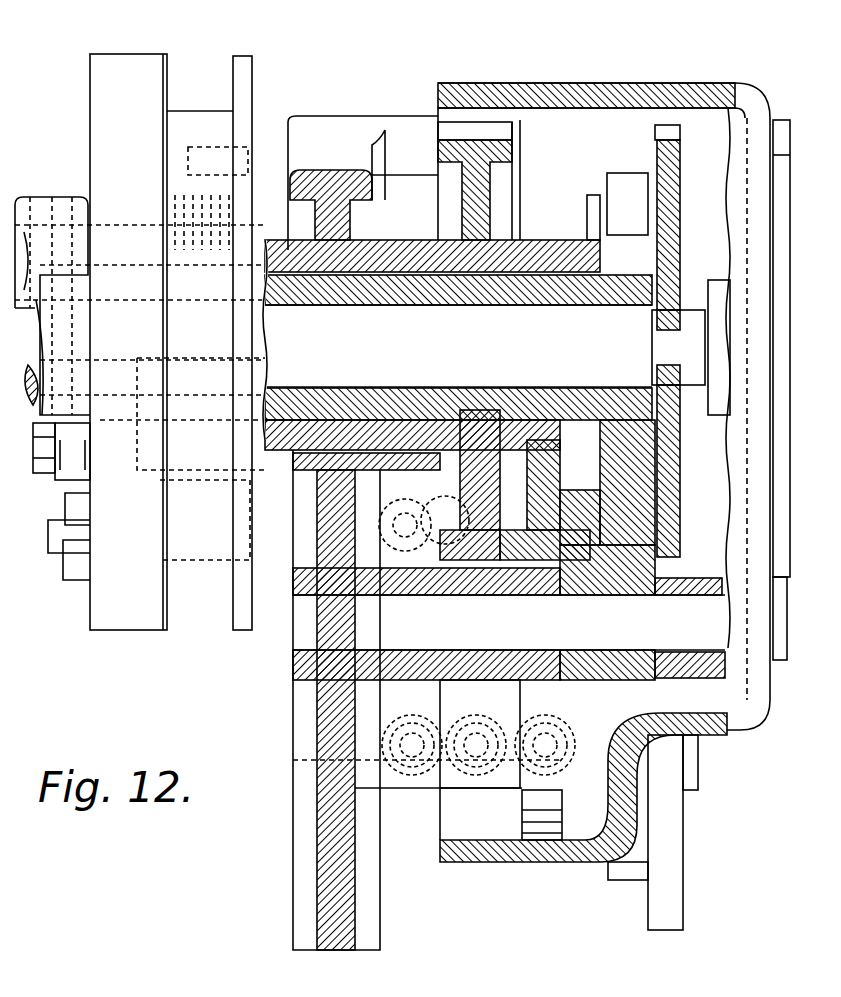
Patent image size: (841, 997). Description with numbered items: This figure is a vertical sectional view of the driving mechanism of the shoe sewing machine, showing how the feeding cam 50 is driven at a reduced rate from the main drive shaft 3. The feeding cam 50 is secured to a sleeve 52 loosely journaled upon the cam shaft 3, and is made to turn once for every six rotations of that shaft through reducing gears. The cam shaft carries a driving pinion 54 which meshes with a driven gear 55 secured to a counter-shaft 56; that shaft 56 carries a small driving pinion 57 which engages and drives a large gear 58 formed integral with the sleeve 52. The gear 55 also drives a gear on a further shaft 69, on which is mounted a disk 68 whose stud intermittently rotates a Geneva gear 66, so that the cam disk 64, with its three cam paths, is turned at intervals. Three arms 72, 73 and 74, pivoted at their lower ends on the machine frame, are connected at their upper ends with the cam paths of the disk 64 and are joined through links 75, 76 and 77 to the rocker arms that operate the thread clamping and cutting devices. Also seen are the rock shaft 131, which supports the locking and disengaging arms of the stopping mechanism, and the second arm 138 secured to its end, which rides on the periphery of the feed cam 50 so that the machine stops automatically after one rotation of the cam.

The feeding cam 50 is at (152, 70).
The rock shaft 131 is at (75, 225).
The second arm 138 is at (62, 205).
The large gear 58 is at (490, 135).
The sleeve 52 is at (468, 290).
The cam disk 64 is at (540, 200).
The driving pinion 54 is at (548, 272).
The Geneva gear 66 is at (626, 197).
The main drive shaft 3 is at (640, 320).
The arm 74 is at (592, 510).
The shaft 56 is at (665, 557).
The link 76 is at (66, 507).
The link 75 is at (60, 532).
The link 77 is at (72, 568).
The arm 72 is at (383, 495).
The arm 73 is at (440, 500).
The small driving pinion 57 is at (465, 735).
The driven gear 55 is at (522, 797).
The disk 68 is at (672, 898).
The shaft 69 is at (698, 765).